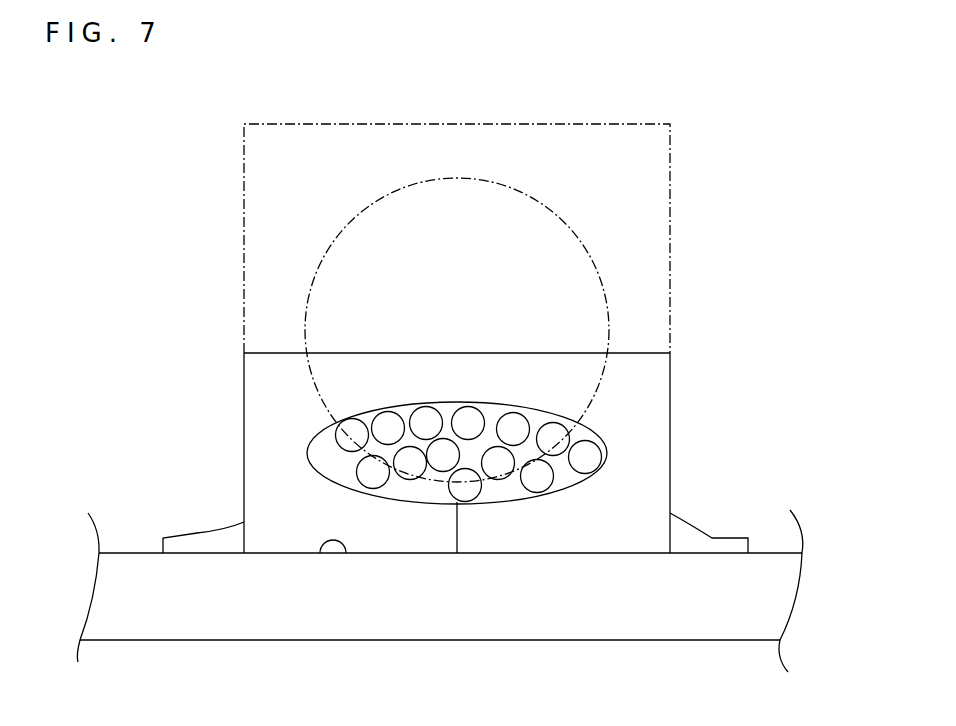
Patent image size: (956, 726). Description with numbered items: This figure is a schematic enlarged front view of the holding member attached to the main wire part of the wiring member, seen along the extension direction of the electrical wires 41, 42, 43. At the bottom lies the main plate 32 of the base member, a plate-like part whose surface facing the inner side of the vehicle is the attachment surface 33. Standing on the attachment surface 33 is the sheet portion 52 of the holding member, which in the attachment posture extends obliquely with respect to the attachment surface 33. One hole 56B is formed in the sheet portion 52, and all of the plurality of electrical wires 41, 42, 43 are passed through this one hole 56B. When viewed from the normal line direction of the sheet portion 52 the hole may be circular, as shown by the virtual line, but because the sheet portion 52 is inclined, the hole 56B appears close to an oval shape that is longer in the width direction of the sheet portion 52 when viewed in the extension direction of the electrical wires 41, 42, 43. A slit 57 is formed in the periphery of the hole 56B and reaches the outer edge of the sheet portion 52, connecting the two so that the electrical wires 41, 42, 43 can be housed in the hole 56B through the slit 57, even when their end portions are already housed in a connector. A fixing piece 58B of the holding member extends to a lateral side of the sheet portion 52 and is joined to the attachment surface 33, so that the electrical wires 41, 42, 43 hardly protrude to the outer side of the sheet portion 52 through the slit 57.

The sheet portion 52 is at (670, 170).
The hole 56B is at (605, 303).
The electrical wire 41 is at (388, 410).
The electrical wire 42 is at (426, 406).
The electrical wire 43 is at (468, 406).
The slit 57 is at (457, 530).
The fixing piece 58B is at (200, 543).
The main plate 32 is at (536, 618).
The attachment surface 33 is at (340, 553).